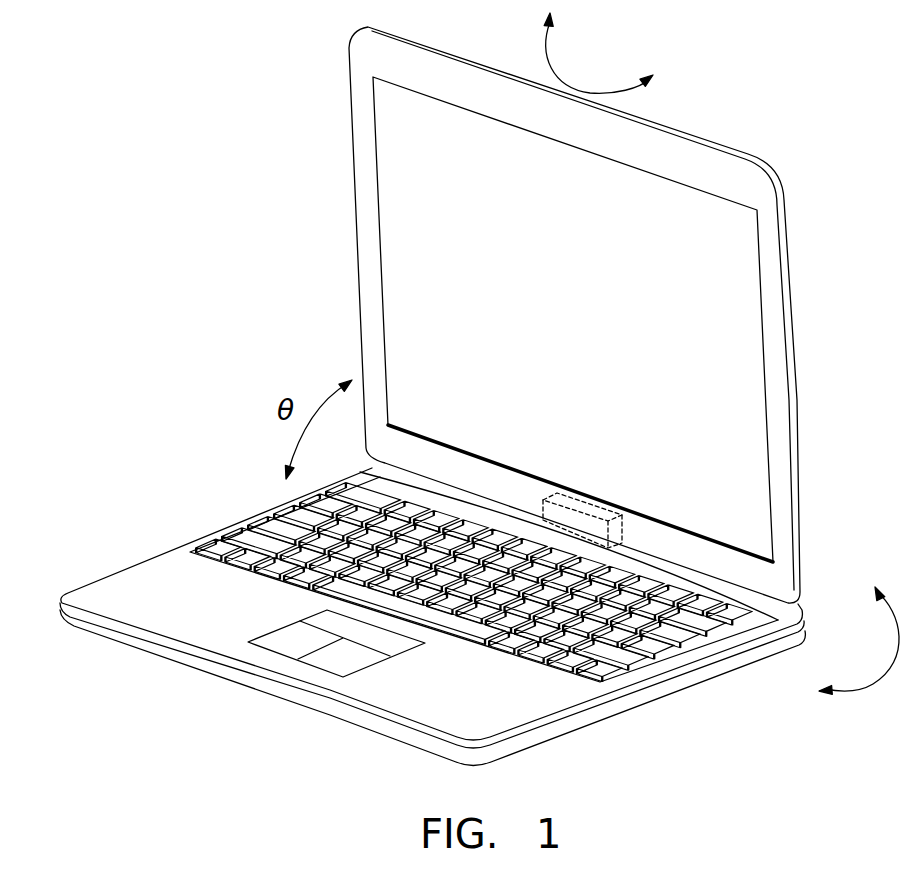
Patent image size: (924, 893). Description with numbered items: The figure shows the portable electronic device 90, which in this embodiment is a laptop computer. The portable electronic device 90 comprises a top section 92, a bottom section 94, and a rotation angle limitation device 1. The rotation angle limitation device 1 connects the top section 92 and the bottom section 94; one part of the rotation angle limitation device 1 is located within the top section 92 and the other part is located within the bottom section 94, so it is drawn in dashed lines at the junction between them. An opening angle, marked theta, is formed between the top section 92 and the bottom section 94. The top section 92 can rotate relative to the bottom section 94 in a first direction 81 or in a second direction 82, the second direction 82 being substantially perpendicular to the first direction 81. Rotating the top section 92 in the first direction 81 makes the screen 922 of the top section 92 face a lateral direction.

The portable electronic device 90 is at (457, 396).
The top section 92 is at (614, 315).
The screen 922 is at (716, 193).
The bottom section 94 is at (652, 689).
The rotation angle limitation device 1 is at (620, 500).
The first direction 81 is at (598, 53).
The second direction 82 is at (859, 640).